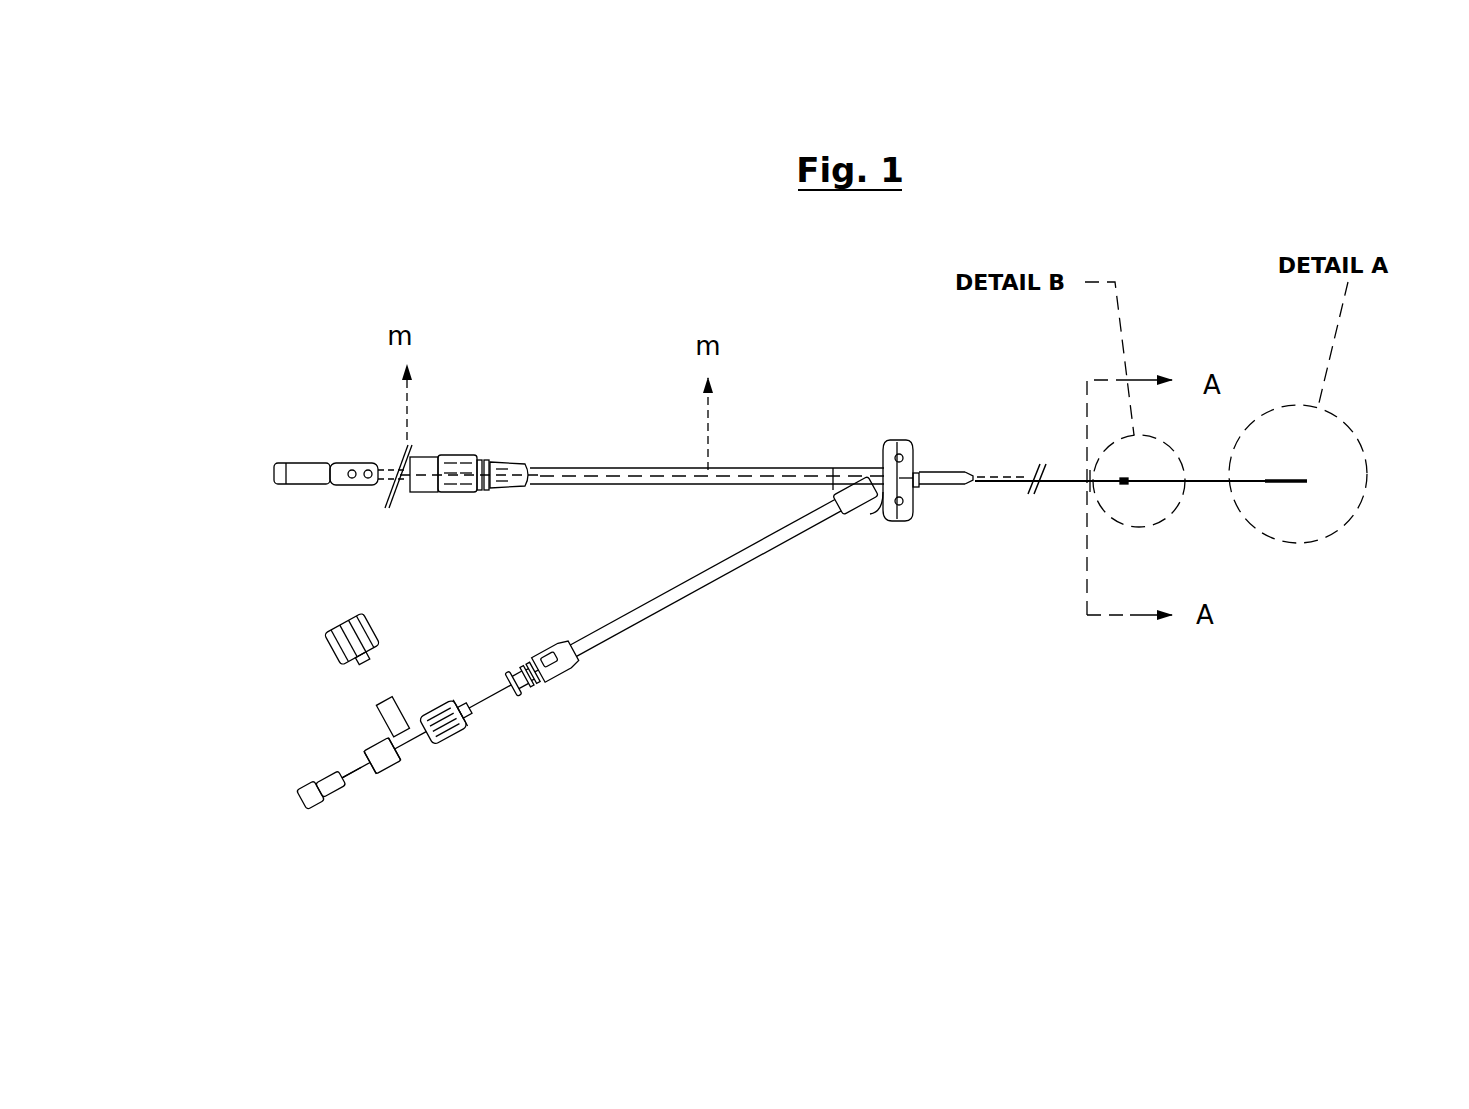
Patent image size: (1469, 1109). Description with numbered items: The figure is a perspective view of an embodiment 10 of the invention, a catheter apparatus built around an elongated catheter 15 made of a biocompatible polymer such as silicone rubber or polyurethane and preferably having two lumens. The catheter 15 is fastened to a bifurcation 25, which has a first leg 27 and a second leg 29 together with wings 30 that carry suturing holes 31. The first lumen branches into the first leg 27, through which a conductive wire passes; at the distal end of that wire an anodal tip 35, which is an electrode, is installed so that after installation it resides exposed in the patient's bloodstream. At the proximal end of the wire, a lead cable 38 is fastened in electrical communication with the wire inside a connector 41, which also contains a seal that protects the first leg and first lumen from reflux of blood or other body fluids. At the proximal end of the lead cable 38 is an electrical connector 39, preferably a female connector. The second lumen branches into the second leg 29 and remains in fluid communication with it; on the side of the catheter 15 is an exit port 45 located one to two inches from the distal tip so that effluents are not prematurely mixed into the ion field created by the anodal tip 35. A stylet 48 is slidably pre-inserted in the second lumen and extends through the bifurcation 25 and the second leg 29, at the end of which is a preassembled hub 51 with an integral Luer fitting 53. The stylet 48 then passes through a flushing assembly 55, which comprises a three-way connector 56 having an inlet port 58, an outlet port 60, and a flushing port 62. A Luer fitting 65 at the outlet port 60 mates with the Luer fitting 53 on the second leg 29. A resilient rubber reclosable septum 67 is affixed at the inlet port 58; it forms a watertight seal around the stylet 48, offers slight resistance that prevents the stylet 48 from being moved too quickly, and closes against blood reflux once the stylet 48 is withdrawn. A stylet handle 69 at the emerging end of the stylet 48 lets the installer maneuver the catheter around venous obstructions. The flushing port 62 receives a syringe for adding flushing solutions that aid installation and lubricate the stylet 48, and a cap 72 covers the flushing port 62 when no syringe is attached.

The embodiment 10 is at (1001, 923).
The catheter 15 is at (1125, 407).
The bifurcation 25 is at (890, 577).
The first leg 27 is at (711, 420).
The second leg 29 is at (705, 614).
The wings 30 is at (932, 452).
The suturing holes 31 is at (969, 514).
The anodal tip 35 is at (1353, 546).
The lead cable 38 is at (333, 416).
The electrical connector 39 is at (254, 422).
The connector 41 is at (481, 414).
The exit port 45 is at (1174, 528).
The stylet 48 is at (413, 881).
The hub 51 is at (606, 704).
The Luer fitting 53 is at (596, 731).
The flushing assembly 55 is at (529, 611).
The three-way connector 56 is at (519, 797).
The inlet port 58 is at (479, 818).
The outlet port 60 is at (469, 637).
The flushing port 62 is at (366, 634).
The Luer fitting 65 is at (563, 772).
The reclosable septum 67 is at (446, 848).
The stylet handle 69 is at (283, 747).
The cap 72 is at (314, 617).